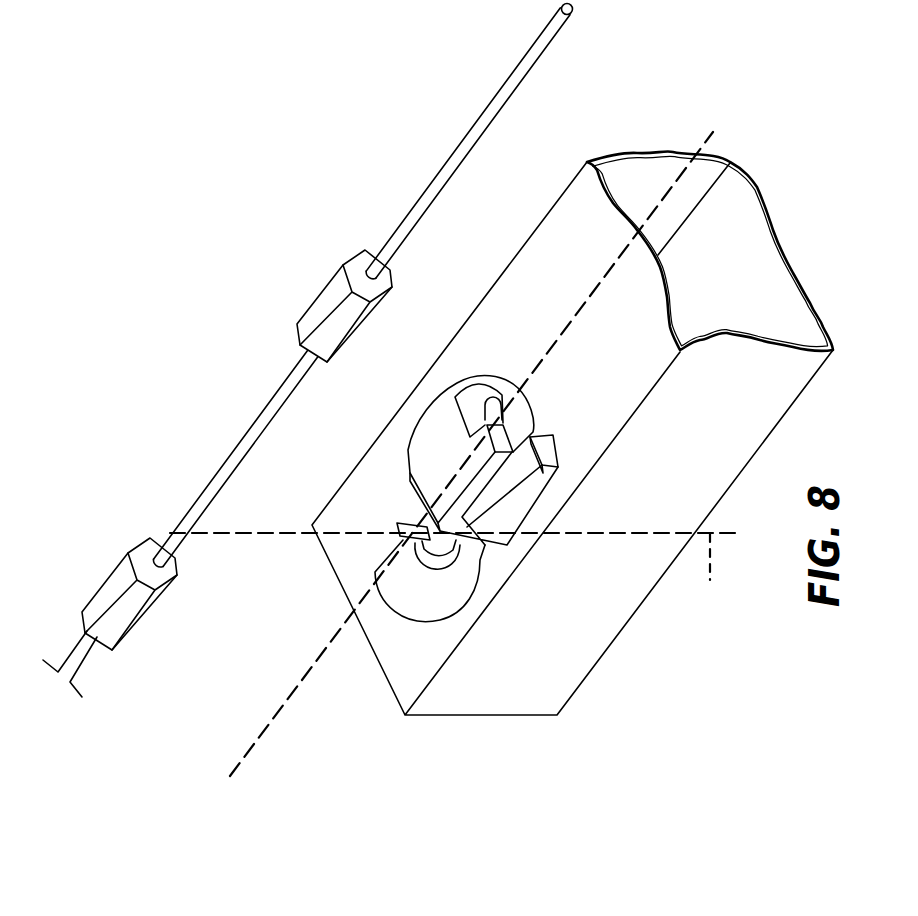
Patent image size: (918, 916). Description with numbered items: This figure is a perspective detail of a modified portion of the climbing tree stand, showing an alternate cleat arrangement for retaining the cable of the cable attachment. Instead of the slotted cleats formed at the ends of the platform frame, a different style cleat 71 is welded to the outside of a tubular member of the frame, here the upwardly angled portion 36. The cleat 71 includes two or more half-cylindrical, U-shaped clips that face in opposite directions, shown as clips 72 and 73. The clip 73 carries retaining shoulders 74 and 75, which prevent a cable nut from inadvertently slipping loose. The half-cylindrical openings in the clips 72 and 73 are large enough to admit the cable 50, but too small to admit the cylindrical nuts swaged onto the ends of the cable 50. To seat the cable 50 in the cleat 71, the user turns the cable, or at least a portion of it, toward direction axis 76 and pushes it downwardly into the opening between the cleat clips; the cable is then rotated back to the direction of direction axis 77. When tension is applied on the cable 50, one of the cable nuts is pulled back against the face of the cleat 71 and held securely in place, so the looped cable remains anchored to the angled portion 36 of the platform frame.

The cable 50 is at (542, 47).
The upwardly angled portion 36 is at (681, 470).
The cleat 71 is at (485, 509).
The clip 72 is at (409, 600).
The clip 73 is at (438, 420).
The retaining shoulder 74 is at (500, 437).
The retaining shoulder 75 is at (550, 447).
The direction axis 76 is at (710, 580).
The direction axis 77 is at (565, 328).